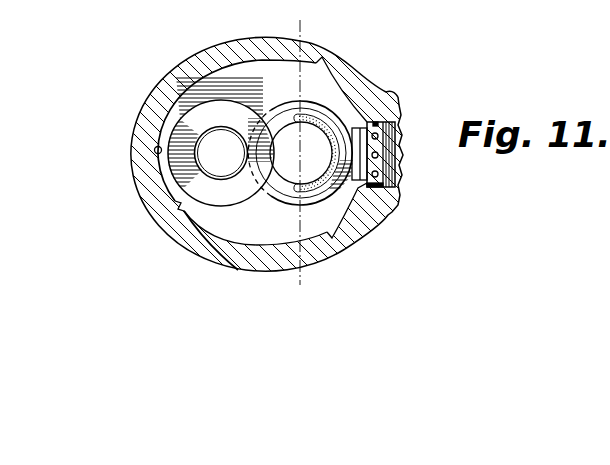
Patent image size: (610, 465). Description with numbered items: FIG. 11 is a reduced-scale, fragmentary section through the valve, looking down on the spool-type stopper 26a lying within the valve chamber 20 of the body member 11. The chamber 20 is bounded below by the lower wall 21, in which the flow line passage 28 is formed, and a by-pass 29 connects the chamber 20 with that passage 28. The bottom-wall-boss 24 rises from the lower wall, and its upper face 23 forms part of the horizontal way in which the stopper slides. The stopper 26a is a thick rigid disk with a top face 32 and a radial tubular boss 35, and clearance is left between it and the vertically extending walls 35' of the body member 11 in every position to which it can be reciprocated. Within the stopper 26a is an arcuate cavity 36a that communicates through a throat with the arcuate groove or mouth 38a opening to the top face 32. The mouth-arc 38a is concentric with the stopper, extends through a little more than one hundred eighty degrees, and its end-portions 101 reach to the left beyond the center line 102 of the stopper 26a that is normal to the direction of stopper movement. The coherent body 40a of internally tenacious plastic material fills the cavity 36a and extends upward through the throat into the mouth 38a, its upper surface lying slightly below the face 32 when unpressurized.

The body member 11 is at (238, 270).
The valve chamber 20 is at (221, 72).
The lower wall 21 is at (201, 220).
The upper face of bottom-wall-boss 23 is at (178, 121).
The bottom-wall-boss 24 is at (177, 204).
The stopper 26a is at (309, 104).
The flow line passage 28 is at (176, 204).
The by-pass 29 is at (155, 150).
The top face of stopper 32 is at (277, 198).
The radial tubular boss 35 is at (385, 173).
The vertically extending walls 35' is at (194, 86).
The arcuate cavity 36a is at (306, 104).
The arcuate groove or mouth 38a is at (304, 120).
The coherent body of plastic material 40a is at (330, 132).
The end-portions of mouth-arc 101 is at (301, 114).
The center line of stopper 102 is at (329, 242).